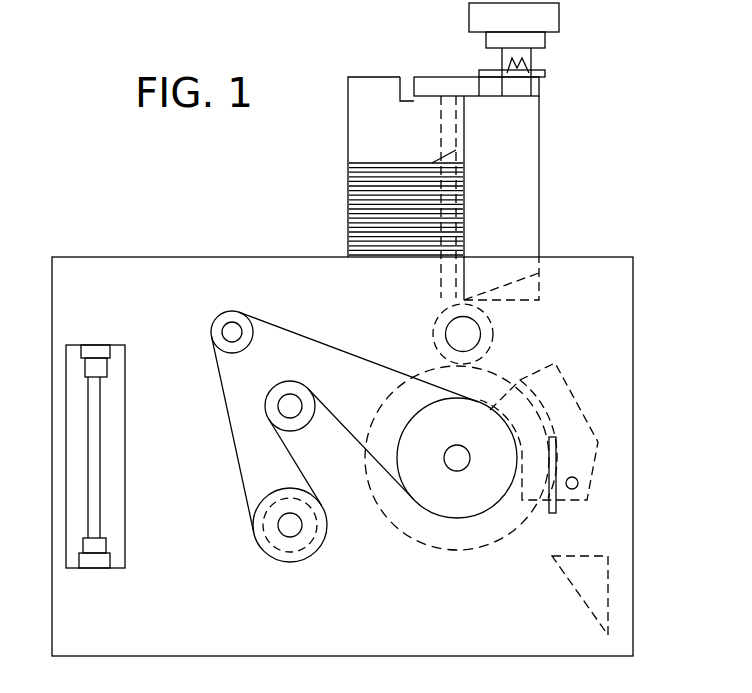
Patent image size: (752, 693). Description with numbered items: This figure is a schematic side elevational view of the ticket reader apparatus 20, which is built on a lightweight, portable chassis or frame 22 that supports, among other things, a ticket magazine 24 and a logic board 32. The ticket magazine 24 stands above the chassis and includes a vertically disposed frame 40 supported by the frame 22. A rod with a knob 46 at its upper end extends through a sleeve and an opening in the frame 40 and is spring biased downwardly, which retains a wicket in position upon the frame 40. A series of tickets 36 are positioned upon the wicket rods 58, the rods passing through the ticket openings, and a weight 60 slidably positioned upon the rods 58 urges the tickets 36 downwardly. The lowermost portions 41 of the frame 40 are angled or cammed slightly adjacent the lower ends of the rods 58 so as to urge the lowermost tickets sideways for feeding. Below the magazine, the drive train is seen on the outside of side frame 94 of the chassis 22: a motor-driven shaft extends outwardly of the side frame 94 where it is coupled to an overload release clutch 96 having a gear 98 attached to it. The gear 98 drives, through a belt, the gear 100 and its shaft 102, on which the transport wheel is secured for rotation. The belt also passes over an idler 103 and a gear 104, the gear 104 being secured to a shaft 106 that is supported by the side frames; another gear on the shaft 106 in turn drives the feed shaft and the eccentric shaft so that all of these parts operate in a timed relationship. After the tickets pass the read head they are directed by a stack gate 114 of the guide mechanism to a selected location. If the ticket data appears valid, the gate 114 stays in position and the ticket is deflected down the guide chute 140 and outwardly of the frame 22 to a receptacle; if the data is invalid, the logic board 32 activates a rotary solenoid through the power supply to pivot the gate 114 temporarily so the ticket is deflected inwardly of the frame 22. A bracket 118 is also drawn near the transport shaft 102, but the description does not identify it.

The apparatus 20 is at (642, 351).
The chassis or frame 22 is at (46, 590).
The ticket magazine 24 is at (484, 151).
The logic board 32 is at (93, 431).
The tickets 36 is at (348, 214).
The frame 40 is at (518, 136).
The lowermost portions 41 is at (502, 310).
The knob 46 is at (528, 31).
The wicket rods 58 is at (458, 157).
The weight 60 is at (410, 152).
The side frame 94 is at (204, 576).
The overload release clutch 96 is at (320, 544).
The gear 98 is at (327, 527).
The gear 100 is at (237, 466).
The shaft 102 is at (457, 458).
The idler 103 is at (253, 292).
The gear 104 is at (291, 431).
The shaft 106 is at (317, 366).
The stack gate 114 is at (552, 521).
The bracket 118 is at (580, 452).
The guide chute 140 is at (590, 608).